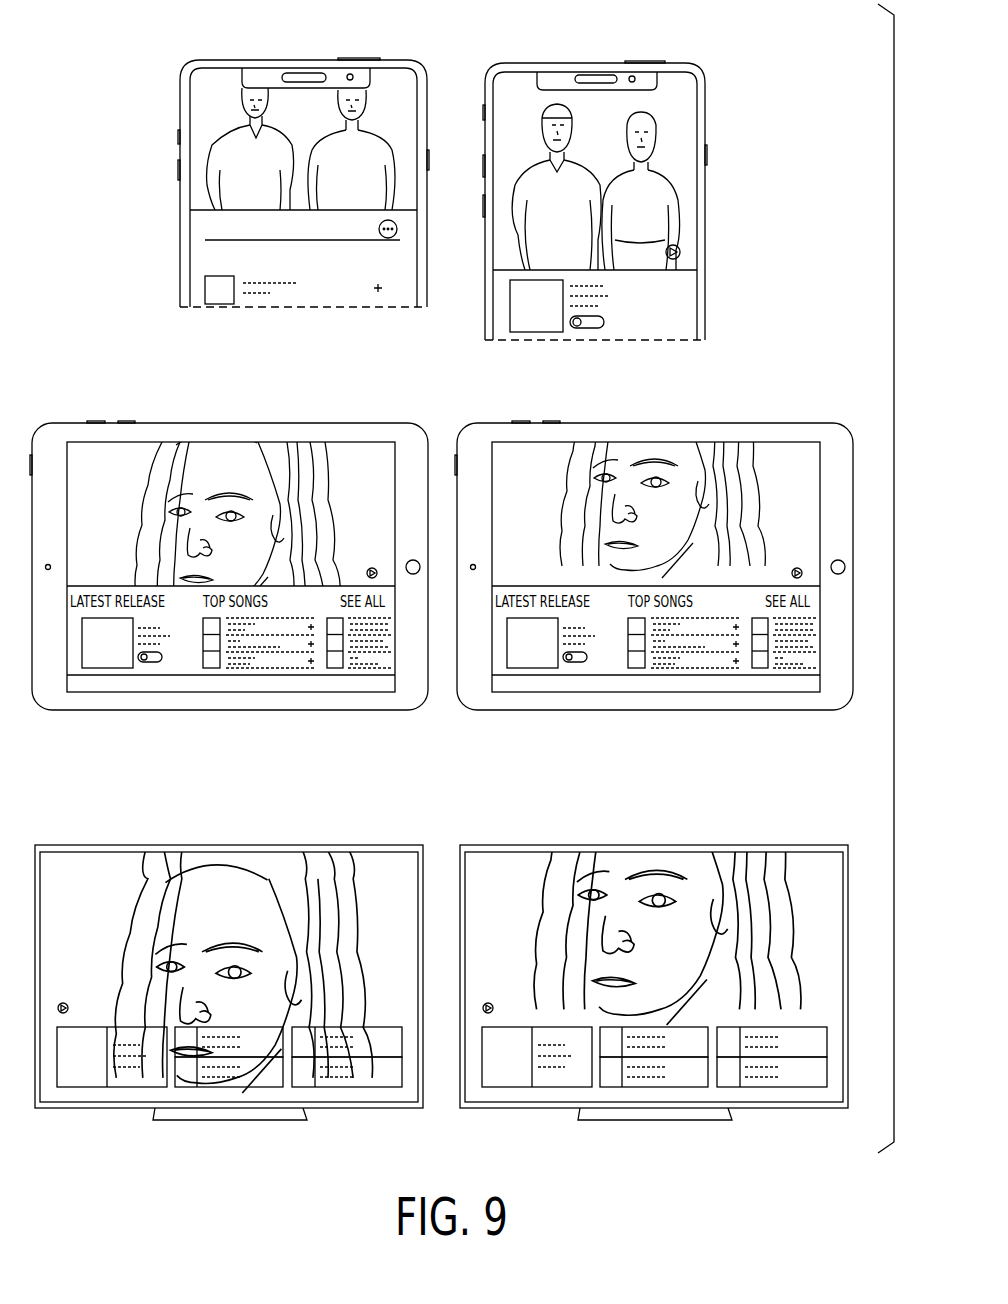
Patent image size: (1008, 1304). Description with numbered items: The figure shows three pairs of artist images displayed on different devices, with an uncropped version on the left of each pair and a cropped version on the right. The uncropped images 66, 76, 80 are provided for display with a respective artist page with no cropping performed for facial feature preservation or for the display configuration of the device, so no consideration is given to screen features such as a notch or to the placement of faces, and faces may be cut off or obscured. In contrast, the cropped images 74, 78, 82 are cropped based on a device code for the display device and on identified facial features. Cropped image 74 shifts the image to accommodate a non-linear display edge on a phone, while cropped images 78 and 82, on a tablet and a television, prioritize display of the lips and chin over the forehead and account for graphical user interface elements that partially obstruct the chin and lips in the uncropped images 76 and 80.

The uncropped image 66 is at (413, 48).
The cropped image 74 is at (716, 52).
The uncropped image 76 is at (328, 405).
The cropped image 78 is at (763, 404).
The uncropped image 80 is at (307, 836).
The cropped image 82 is at (750, 830).